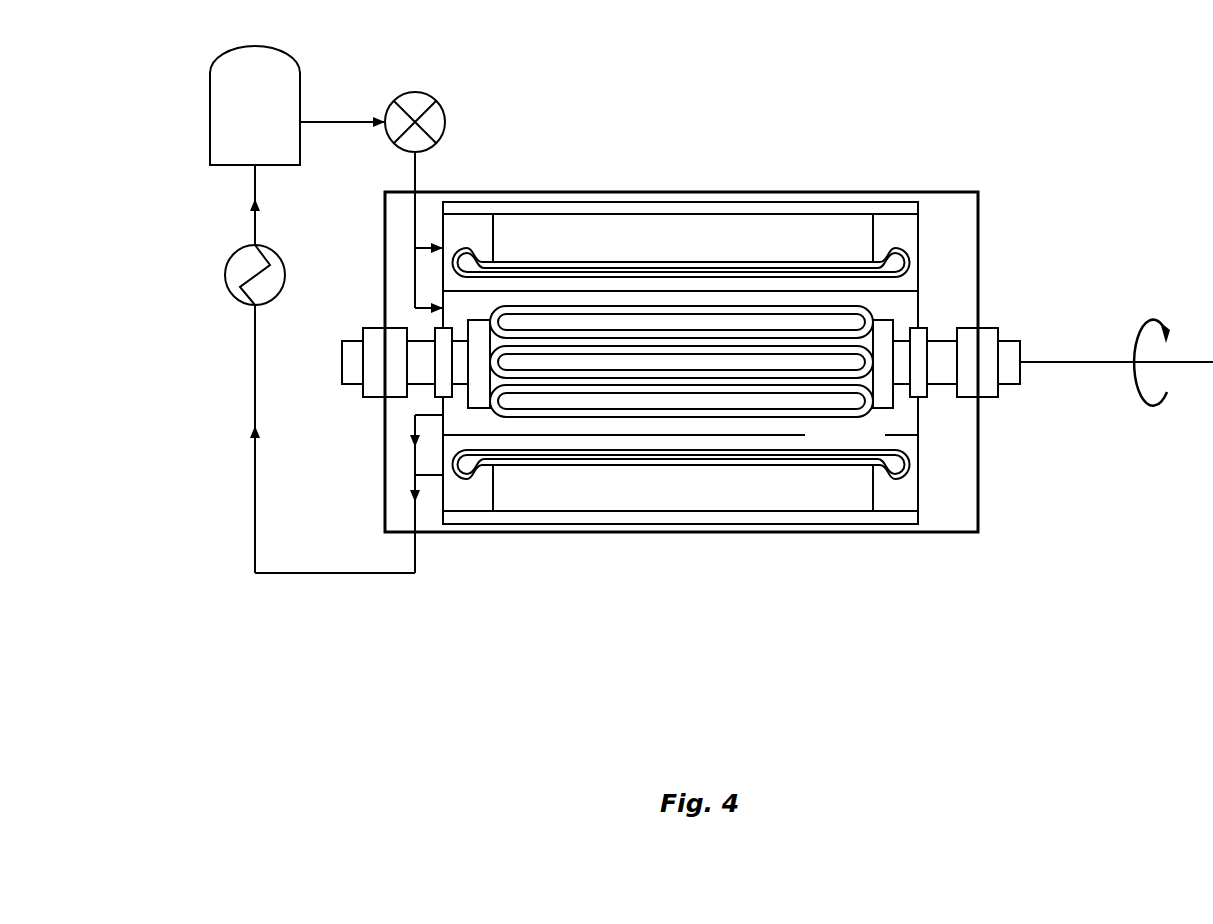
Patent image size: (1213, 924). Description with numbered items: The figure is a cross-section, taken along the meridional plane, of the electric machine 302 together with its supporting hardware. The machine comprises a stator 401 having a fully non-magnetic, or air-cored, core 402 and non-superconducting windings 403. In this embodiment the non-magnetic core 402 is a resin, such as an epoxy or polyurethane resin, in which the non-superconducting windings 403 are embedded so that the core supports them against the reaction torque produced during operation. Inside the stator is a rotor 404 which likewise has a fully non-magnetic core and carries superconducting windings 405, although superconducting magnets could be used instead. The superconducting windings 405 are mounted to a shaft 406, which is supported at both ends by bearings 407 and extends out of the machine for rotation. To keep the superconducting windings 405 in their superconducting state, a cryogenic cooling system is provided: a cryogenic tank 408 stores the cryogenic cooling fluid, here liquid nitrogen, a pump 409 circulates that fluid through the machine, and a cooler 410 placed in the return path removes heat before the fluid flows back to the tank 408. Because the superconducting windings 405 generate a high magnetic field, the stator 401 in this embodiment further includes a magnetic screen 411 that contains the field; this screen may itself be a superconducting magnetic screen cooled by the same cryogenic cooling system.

The electric machine 302 is at (1004, 89).
The stator 401 is at (897, 237).
The non-magnetic core 402 is at (632, 214).
The non-superconducting windings 403 is at (772, 263).
The rotor 404 is at (896, 410).
The superconducting windings 405 is at (802, 398).
The shaft 406 is at (1016, 380).
The bearings 407 is at (377, 328).
The cryogenic tank 408 is at (226, 62).
The pump 409 is at (402, 103).
The cooler 410 is at (240, 254).
The magnetic screen 411 is at (716, 203).